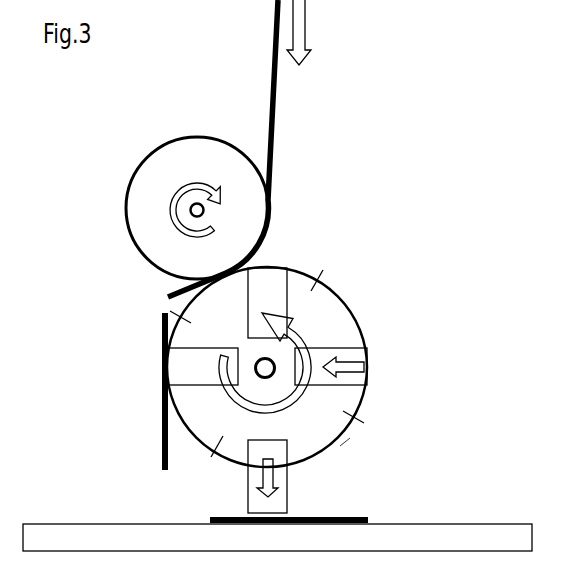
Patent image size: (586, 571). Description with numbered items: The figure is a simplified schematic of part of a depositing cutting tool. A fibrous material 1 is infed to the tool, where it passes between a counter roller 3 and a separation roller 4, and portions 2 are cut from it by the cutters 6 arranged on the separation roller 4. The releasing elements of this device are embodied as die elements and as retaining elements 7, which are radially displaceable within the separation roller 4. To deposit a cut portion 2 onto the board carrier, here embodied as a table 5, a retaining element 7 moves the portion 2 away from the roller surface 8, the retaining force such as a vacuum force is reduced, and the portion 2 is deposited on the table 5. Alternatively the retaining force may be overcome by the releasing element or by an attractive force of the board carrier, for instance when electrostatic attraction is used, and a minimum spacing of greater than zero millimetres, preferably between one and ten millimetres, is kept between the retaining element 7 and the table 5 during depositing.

The fibrous material 1 is at (278, 110).
The portions 2 is at (162, 333).
The counter roller 3 is at (168, 133).
The separation roller 4 is at (366, 333).
The table 5 is at (462, 524).
The cutters 6 is at (325, 288).
The retaining elements 7 is at (270, 266).
The roller surface 8 is at (343, 443).